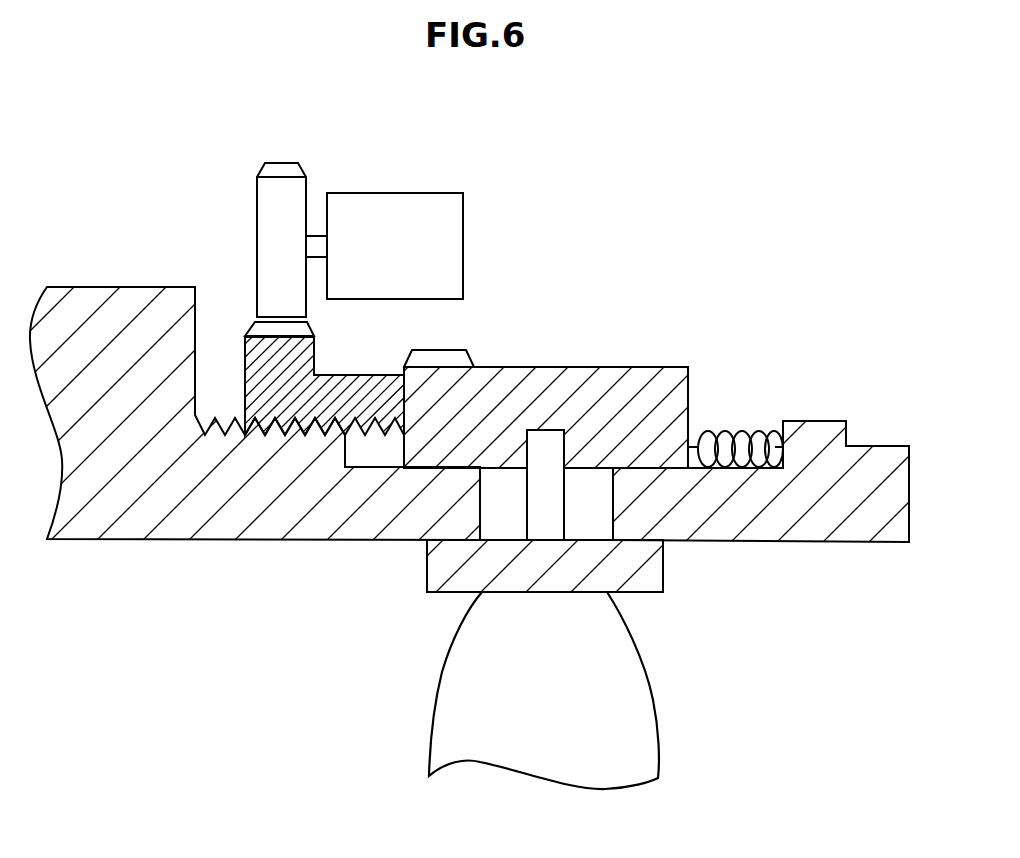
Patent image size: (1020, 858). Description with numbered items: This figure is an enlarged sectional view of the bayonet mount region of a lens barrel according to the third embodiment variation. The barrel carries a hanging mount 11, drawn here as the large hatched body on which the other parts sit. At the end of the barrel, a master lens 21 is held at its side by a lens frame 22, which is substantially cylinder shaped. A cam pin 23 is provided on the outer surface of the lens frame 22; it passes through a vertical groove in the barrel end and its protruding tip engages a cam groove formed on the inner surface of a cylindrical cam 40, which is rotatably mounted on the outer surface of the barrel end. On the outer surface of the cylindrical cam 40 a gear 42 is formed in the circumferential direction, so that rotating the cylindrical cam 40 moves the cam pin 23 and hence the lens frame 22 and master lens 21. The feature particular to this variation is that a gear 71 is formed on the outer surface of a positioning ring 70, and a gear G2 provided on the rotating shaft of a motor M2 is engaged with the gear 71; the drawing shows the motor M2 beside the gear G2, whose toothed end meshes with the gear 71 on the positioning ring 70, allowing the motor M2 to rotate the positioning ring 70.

The hanging mount 11 is at (380, 522).
The master lens 21 is at (647, 708).
The lens frame 22 is at (663, 573).
The cam pin 23 is at (545, 442).
The cylindrical cam 40 is at (662, 388).
The gear 42 is at (461, 349).
The positioning ring 70 is at (313, 407).
The gear 71 is at (272, 323).
The gear G2 is at (284, 190).
The motor M2 is at (463, 243).